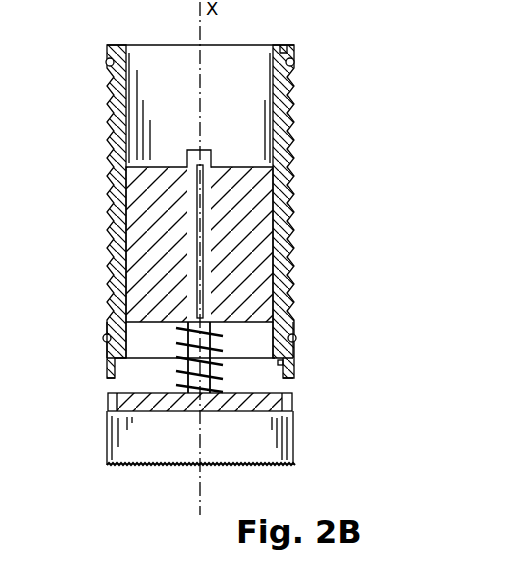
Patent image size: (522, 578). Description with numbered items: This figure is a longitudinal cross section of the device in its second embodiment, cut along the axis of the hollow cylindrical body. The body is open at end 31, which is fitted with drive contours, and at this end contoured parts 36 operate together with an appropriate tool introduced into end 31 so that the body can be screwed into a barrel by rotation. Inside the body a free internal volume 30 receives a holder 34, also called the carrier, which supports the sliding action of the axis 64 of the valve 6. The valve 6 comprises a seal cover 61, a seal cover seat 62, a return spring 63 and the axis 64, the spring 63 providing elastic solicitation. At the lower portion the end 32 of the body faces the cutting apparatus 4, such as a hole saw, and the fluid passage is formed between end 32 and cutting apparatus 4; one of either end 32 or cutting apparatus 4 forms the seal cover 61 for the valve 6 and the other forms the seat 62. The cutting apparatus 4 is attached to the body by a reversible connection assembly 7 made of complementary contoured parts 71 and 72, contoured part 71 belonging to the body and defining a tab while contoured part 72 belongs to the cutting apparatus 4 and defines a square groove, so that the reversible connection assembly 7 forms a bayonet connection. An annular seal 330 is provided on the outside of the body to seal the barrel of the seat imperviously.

The end 31 is at (108, 47).
The contoured parts 36 is at (280, 50).
The holder 34 is at (242, 202).
The free internal volume 30 is at (150, 330).
The annular seal 330 is at (103, 338).
The end 32 is at (110, 347).
The reversible connection assembly 7 is at (43, 368).
The contoured part 71 is at (110, 366).
The contoured part 72 is at (107, 397).
The cutting apparatus 4 is at (107, 450).
The valve 6 is at (355, 283).
The return spring 63 is at (221, 333).
The axis 64 is at (280, 322).
The seal cover seat 62 is at (223, 358).
The seal cover 61 is at (263, 392).